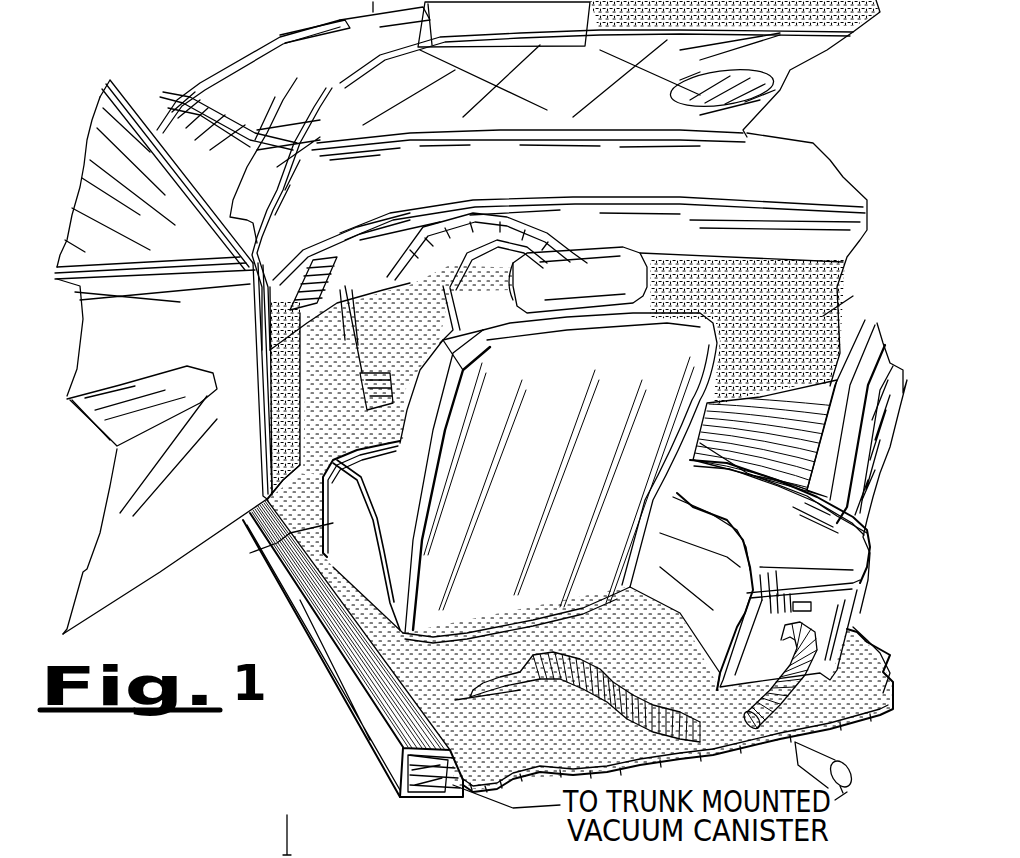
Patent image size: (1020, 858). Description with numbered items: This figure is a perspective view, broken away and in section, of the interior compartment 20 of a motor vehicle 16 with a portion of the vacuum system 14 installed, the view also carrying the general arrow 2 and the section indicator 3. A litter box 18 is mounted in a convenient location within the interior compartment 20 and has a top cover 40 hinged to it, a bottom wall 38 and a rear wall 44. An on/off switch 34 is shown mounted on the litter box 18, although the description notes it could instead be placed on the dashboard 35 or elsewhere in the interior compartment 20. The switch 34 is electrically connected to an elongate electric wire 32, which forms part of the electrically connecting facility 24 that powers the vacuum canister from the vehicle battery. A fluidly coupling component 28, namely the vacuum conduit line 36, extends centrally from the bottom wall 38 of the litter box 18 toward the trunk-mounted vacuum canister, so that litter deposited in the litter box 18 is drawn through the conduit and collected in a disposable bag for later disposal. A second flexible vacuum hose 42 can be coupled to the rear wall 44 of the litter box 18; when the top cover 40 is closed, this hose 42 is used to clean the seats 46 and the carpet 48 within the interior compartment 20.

The vehicle 2 is at (265, 590).
The section line 3 is at (286, 820).
The vacuum system 14 is at (878, 566).
The motor vehicle 16 is at (193, 80).
The litter box 18 is at (864, 600).
The interior compartment 20 is at (883, 288).
The electrically connecting facility 24 is at (440, 780).
The fluidly coupling component 28 is at (851, 743).
The elongate electric wire 32 is at (417, 799).
The on/off switch 34 is at (793, 607).
The dashboard 35 is at (803, 227).
The vacuum conduit line 36 is at (813, 757).
The bottom wall 38 is at (680, 613).
The top cover 40 is at (693, 478).
The second flexible vacuum hose 42 is at (548, 685).
The rear wall 44 is at (753, 622).
The seats 46 is at (549, 432).
The carpet 48 is at (460, 647).